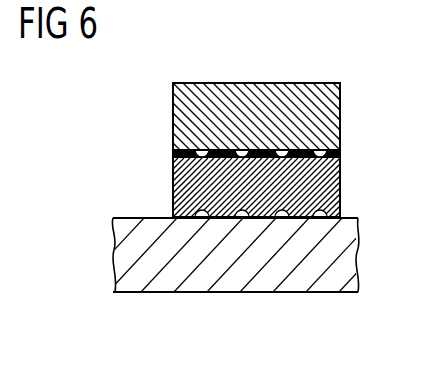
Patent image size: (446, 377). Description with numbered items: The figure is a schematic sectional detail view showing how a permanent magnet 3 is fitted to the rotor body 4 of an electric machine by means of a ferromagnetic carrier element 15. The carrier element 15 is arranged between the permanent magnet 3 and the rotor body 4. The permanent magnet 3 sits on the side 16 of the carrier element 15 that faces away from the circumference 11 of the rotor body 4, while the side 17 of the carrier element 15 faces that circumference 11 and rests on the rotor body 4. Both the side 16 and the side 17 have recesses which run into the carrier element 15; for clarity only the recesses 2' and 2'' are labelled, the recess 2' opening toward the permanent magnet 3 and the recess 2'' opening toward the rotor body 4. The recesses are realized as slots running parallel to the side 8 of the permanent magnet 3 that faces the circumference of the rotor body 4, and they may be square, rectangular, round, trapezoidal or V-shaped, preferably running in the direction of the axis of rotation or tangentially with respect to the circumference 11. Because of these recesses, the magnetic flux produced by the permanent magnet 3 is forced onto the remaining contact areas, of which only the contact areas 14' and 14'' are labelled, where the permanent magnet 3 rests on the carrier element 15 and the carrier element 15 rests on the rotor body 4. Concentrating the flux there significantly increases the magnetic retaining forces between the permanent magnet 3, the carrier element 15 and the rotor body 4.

The permanent magnet 3 is at (330, 113).
The side of the permanent magnet 8 is at (328, 152).
The carrier element 15 is at (333, 187).
The rotor body 4 is at (360, 258).
The side of the carrier element facing away from the circumference 16 is at (173, 154).
The side of the carrier element facing the circumference 17 is at (183, 220).
The circumference of the rotor body 11 is at (118, 218).
The recess 2' is at (202, 95).
The contact area 14' is at (270, 95).
The recess 2'' is at (202, 283).
The contact area 14'' is at (261, 277).